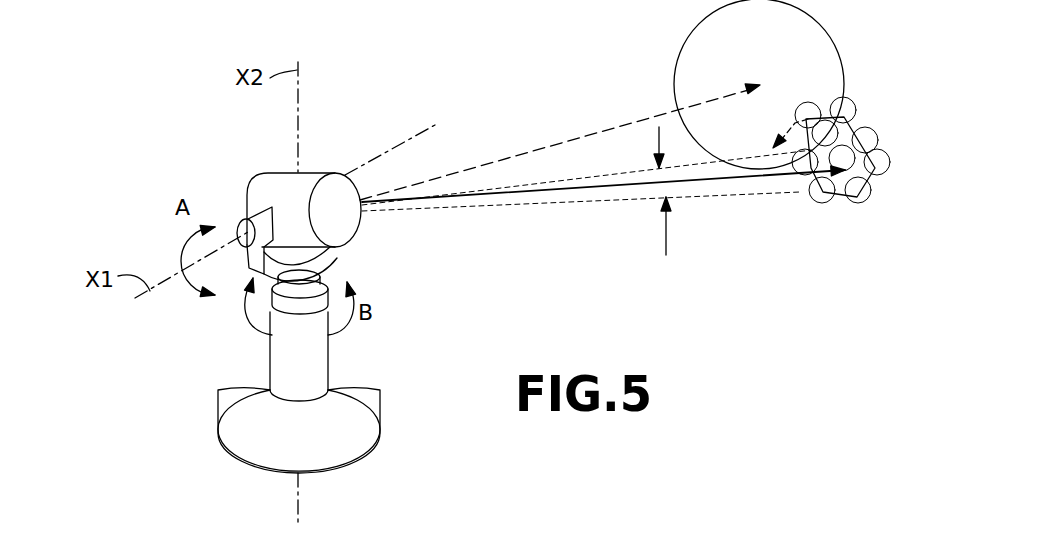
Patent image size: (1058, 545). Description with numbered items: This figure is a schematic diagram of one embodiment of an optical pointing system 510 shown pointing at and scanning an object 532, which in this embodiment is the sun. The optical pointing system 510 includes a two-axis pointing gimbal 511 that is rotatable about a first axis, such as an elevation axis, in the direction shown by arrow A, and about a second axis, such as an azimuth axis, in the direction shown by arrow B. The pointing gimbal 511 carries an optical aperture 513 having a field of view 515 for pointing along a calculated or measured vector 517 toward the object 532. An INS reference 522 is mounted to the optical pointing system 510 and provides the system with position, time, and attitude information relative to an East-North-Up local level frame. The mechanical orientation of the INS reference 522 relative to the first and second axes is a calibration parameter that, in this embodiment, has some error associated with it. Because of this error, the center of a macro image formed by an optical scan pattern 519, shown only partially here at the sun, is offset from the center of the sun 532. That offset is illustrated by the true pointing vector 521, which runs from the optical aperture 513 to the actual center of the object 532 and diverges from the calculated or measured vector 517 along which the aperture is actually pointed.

The optical pointing system 510 is at (372, 50).
The two-axis pointing gimbal 511 is at (210, 351).
The optical aperture 513 is at (340, 230).
The field of view 515 is at (664, 240).
The calculated or measured vector 517 is at (700, 180).
The optical scan pattern 519 is at (888, 196).
The true pointing vector 521 is at (562, 143).
The INS reference 522 is at (357, 385).
The object 532 is at (833, 46).